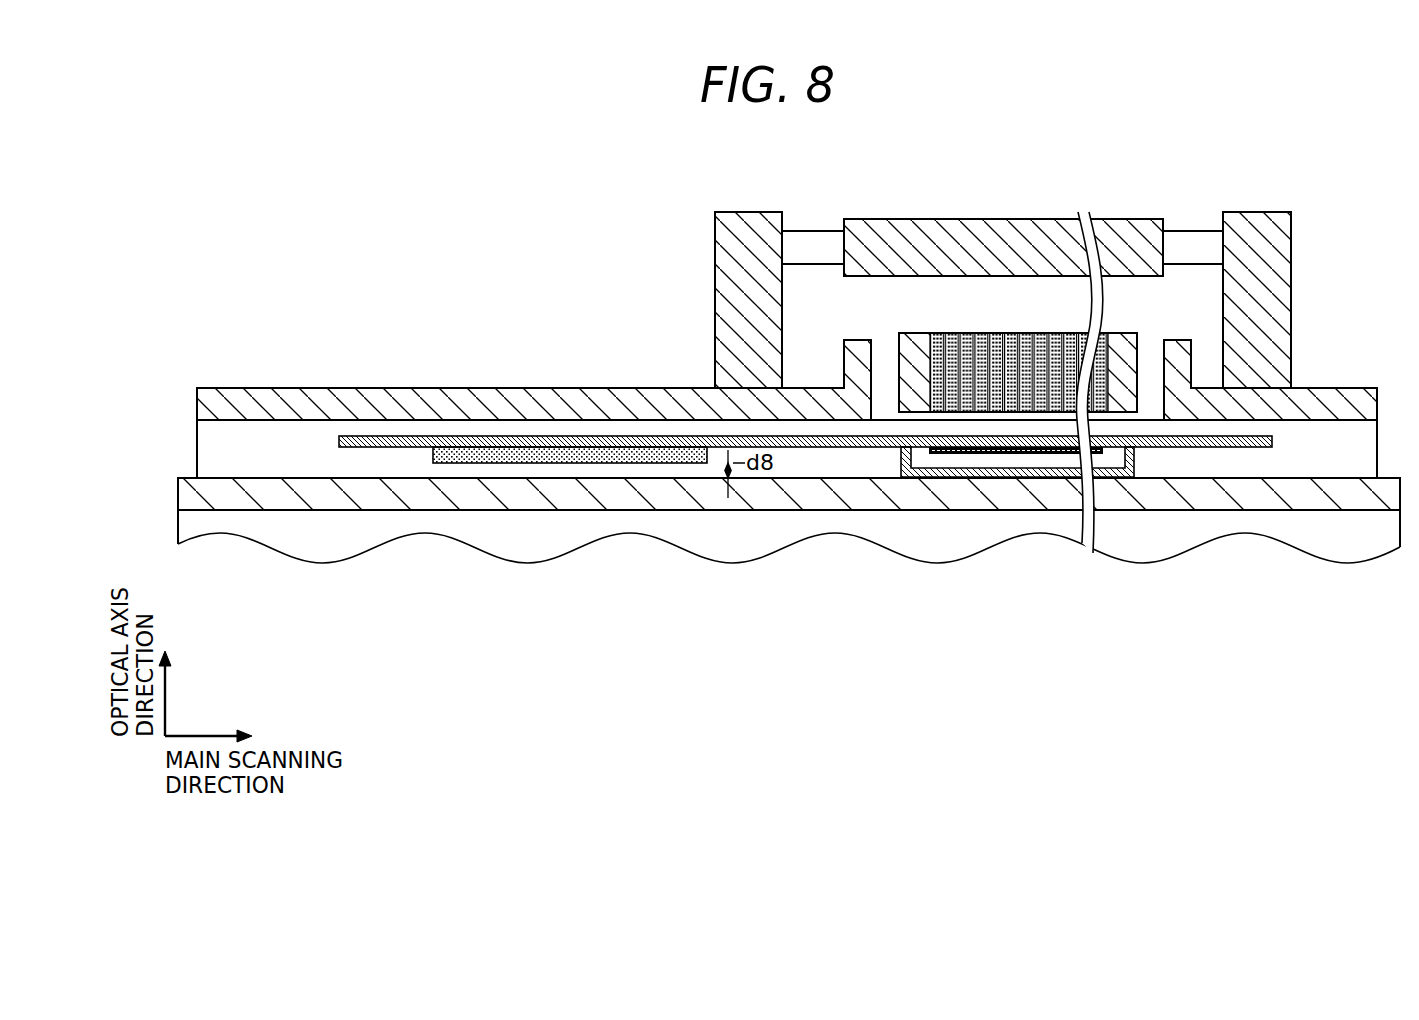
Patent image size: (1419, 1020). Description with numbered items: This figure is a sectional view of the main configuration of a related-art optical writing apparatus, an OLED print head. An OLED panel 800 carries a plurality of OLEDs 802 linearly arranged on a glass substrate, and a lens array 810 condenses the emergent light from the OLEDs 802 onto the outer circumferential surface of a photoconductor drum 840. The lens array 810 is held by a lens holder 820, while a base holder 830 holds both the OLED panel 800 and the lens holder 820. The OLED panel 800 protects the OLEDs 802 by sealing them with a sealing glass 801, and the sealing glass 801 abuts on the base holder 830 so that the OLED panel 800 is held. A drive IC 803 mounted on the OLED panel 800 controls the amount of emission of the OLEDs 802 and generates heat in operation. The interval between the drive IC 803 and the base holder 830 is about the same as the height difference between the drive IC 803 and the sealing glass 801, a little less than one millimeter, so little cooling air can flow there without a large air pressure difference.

The OLED panel 800 is at (772, 521).
The sealing glass 801 is at (899, 450).
The OLEDs 802 is at (1005, 450).
The drive IC 803 is at (480, 463).
The lens array 810 is at (899, 330).
The lens holder 820 is at (278, 388).
The base holder 830 is at (1180, 530).
The photoconductor drum 840 is at (898, 219).